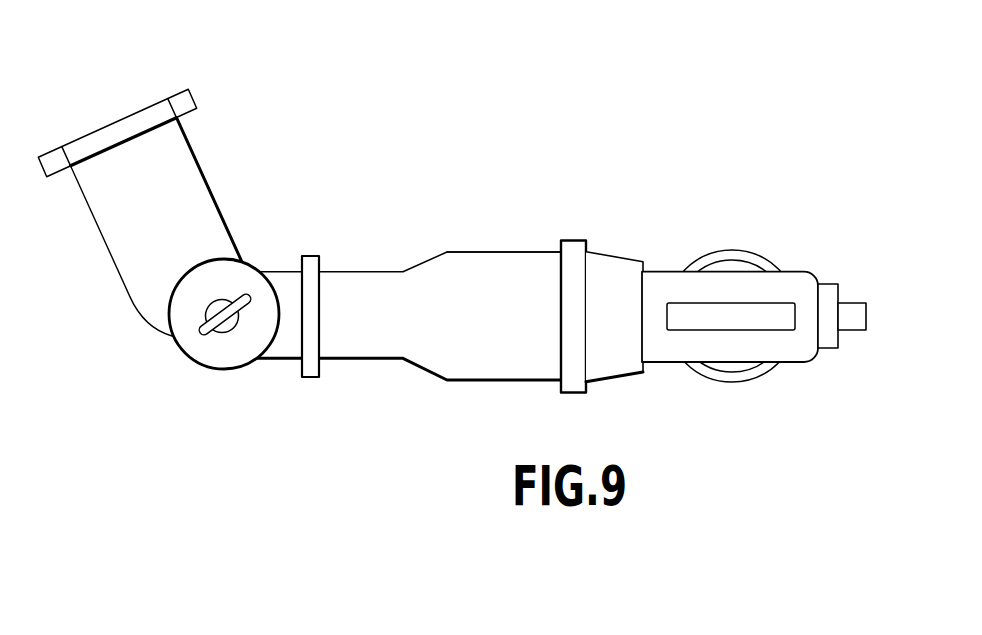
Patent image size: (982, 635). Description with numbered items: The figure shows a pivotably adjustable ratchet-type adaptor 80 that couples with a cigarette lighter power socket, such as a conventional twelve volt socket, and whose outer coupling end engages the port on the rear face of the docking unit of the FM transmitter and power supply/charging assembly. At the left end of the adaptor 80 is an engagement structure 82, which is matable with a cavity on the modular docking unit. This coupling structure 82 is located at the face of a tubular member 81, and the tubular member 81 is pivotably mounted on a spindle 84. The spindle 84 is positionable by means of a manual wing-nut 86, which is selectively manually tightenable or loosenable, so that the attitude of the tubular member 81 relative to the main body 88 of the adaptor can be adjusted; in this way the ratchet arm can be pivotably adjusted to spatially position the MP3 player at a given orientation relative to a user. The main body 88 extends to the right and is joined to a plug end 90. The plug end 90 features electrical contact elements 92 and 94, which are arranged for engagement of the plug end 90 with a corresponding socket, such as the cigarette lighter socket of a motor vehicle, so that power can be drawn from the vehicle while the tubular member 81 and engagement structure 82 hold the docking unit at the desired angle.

The ratchet-type adaptor 80 is at (508, 172).
The tubular member 81 is at (197, 183).
The engagement structure 82 is at (145, 60).
The spindle 84 is at (218, 358).
The manual wing-nut 86 is at (197, 334).
The main body 88 is at (487, 373).
The plug end 90 is at (833, 230).
The electrical contact element 92 is at (727, 382).
The electrical contact element 94 is at (853, 332).